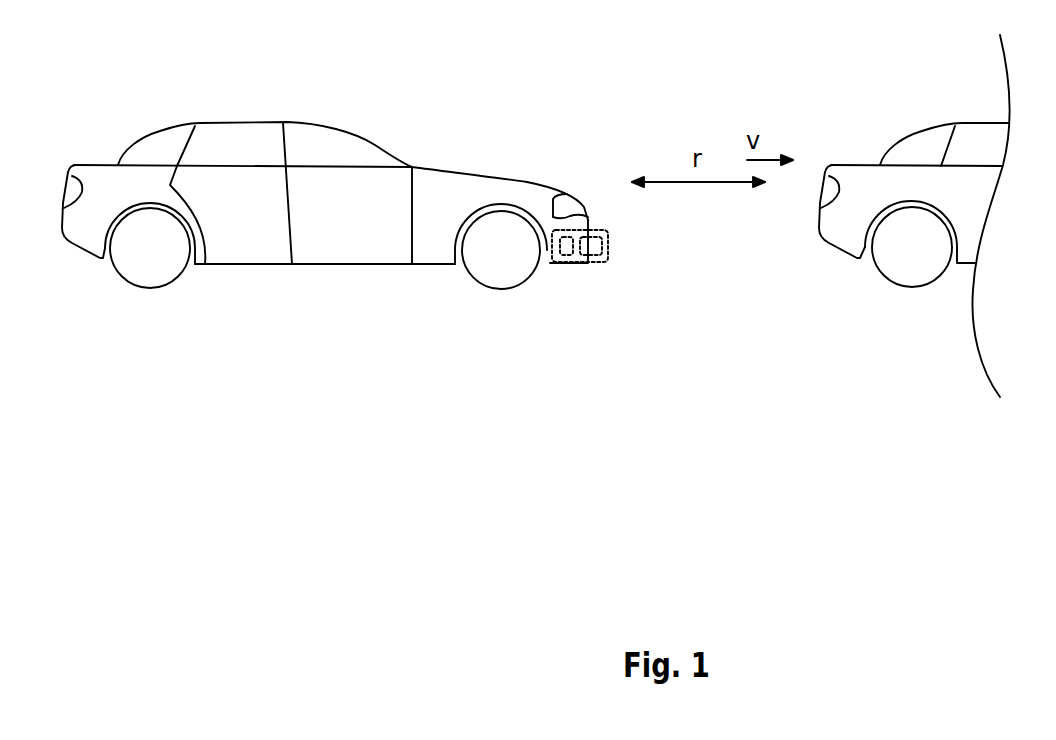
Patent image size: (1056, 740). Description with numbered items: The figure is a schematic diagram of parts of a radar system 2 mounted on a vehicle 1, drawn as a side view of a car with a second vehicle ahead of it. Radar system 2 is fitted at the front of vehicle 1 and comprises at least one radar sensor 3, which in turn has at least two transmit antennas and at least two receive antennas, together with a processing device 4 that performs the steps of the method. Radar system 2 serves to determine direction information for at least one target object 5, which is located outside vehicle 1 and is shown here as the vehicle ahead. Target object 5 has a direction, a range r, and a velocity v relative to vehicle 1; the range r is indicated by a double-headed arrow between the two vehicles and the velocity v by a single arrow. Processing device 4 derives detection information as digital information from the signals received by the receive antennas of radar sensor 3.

The vehicle 1 is at (527, 182).
The radar system 2 is at (608, 245).
The radar sensor 3 is at (607, 252).
The processing device 4 is at (547, 250).
The target object 5 is at (852, 163).